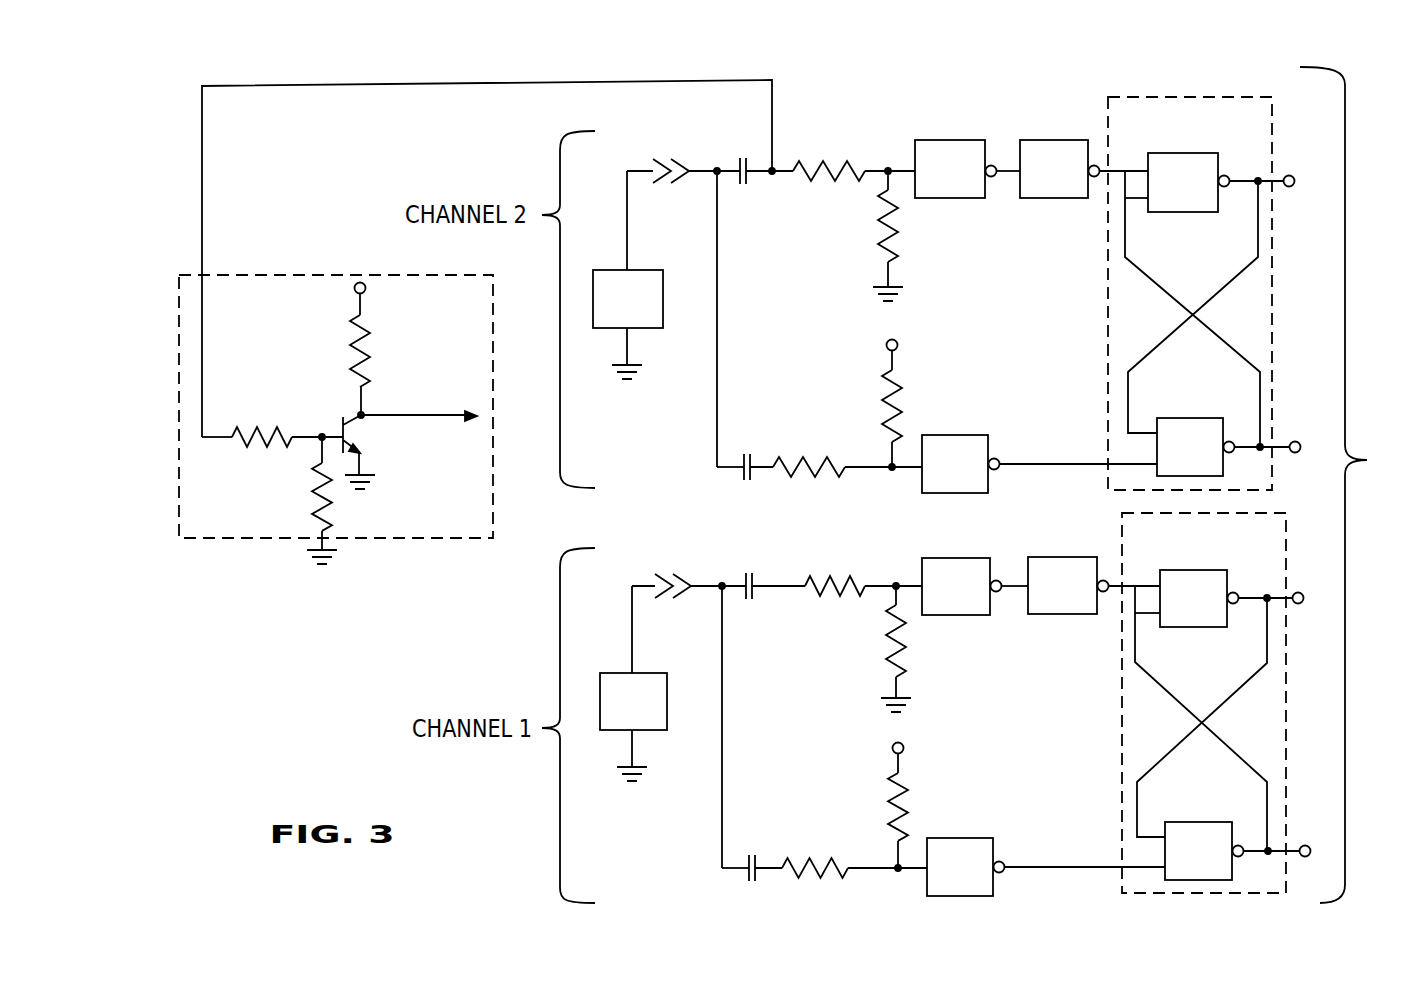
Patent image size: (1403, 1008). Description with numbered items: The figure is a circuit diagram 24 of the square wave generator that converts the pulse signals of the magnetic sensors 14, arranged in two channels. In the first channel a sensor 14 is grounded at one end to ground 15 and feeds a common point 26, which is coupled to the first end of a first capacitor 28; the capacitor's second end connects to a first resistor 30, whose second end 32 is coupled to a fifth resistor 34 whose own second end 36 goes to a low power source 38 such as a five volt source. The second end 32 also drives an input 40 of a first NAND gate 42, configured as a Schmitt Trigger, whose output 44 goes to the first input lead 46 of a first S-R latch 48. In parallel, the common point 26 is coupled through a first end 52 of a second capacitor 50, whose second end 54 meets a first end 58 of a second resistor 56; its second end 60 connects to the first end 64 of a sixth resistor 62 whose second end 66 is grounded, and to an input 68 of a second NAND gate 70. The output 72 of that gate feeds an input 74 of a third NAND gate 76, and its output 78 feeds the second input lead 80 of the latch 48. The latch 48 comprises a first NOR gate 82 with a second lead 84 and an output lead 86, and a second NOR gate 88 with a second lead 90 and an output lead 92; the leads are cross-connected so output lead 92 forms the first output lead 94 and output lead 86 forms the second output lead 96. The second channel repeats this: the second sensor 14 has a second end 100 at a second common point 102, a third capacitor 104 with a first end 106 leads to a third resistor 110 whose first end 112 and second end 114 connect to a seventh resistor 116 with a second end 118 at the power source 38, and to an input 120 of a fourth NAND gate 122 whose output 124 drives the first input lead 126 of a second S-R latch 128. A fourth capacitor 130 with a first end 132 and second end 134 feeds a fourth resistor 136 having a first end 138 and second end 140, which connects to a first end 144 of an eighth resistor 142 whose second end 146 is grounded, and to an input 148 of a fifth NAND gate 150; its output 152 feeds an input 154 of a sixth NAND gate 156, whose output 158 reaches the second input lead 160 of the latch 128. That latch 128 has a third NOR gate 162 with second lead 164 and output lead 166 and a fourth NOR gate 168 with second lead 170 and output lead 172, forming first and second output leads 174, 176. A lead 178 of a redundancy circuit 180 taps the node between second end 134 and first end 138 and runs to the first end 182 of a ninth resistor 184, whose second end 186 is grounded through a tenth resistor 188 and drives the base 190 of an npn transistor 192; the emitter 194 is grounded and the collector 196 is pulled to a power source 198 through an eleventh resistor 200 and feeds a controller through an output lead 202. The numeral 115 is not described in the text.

The sensor 14 is at (616, 312).
The ground 15 is at (338, 555).
The circuit diagram 24 is at (1368, 432).
The common point 26 is at (718, 592).
The first capacitor 28 is at (751, 853).
The first resistor 30 is at (797, 866).
The second end of first resistor 32 is at (867, 866).
The fifth resistor 34 is at (902, 804).
The second end of fifth resistor 36 is at (901, 866).
The low power source 38 is at (898, 342).
The input of first NAND gate 40 is at (912, 872).
The first NAND gate 42 is at (948, 880).
The output of first NAND gate 44 is at (1025, 866).
The first input lead of first S-R latch 46 is at (1135, 866).
The first SET-RESET (S-R) latch 48 is at (1183, 546).
The second capacitor 50 is at (751, 604).
The first end of second capacitor 52 is at (740, 580).
The second end of second capacitor 54 is at (763, 580).
The second resistor 56 is at (847, 598).
The first end of second resistor 58 is at (782, 582).
The second end of second resistor 60 is at (872, 582).
The sixth resistor 62 is at (900, 658).
The first end of sixth resistor 64 is at (901, 620).
The second end of sixth resistor 66 is at (890, 686).
The input of second NAND gate 68 is at (906, 580).
The second NAND gate 70 is at (944, 599).
The output of second NAND gate 72 is at (1003, 593).
The input of third NAND gate 74 is at (1012, 592).
The third NAND gate 76 is at (1050, 599).
The output of third NAND gate 78 is at (1115, 583).
The second input lead of first S-R latch 80 is at (1133, 584).
The first NOR gate 82 is at (1186, 864).
The second lead of first NOR gate 84 is at (1152, 836).
The output lead of first NOR gate 86 is at (1258, 848).
The second NOR gate 88 is at (1181, 611).
The second lead of second NOR gate 90 is at (1145, 618).
The output lead of second NOR gate 92 is at (1244, 594).
The first output lead of first S-R latch 94 is at (1298, 592).
The second output lead of first S-R latch 96 is at (1305, 844).
The second end of sensor 100 is at (627, 237).
The second common point 102 is at (714, 175).
The third capacitor 104 is at (744, 482).
The first end of third capacitor 106 is at (728, 474).
The third resistor 110 is at (782, 464).
The first end of third resistor 112 is at (757, 452).
The second end of third resistor 114 is at (868, 455).
The conductor 115 is at (893, 452).
The seventh resistor 116 is at (895, 398).
The second end of seventh resistor 118 is at (885, 362).
The input of fourth NAND gate 120 is at (907, 470).
The fourth NAND gate 122 is at (937, 477).
The output of fourth NAND gate 124 is at (1018, 458).
The first input lead of second S-R latch 126 is at (1130, 460).
The second SET-RESET (S-R) latch 128 is at (1167, 131).
The fourth capacitor 130 is at (745, 195).
The first end of fourth capacitor 132 is at (732, 168).
The second end of fourth capacitor 134 is at (763, 168).
The fourth resistor 136 is at (835, 185).
The first end of fourth resistor 138 is at (790, 178).
The second end of fourth resistor 140 is at (868, 175).
The eighth resistor 142 is at (895, 238).
The first end of eighth resistor 144 is at (889, 190).
The second end of eighth resistor 146 is at (880, 275).
The input of fifth NAND gate 148 is at (898, 168).
The fifth NAND gate 150 is at (932, 182).
The output of fifth NAND gate 152 is at (998, 176).
The input of sixth NAND gate 154 is at (1008, 175).
The sixth NAND gate 156 is at (1036, 182).
The output of sixth NAND gate 158 is at (1108, 167).
The second input lead of second S-R latch 160 is at (1123, 168).
The third NOR gate 162 is at (1172, 460).
The second lead of third NOR gate 164 is at (1145, 432).
The output lead of third NOR gate 166 is at (1250, 445).
The fourth NOR gate 168 is at (1165, 195).
The second lead of fourth NOR gate 170 is at (1136, 200).
The output lead of fourth NOR gate 172 is at (1236, 172).
The first output lead of second S-R latch 174 is at (1288, 170).
The second output lead of second S-R latch 176 is at (1296, 440).
The lead 178 is at (202, 215).
The redundancy circuit 180 is at (217, 306).
The first end of ninth resistor 182 is at (215, 437).
The ninth resistor 184 is at (258, 433).
The second end of ninth resistor 186 is at (320, 436).
The tenth resistor 188 is at (318, 500).
The base 190 is at (338, 428).
The npn transistor 192 is at (352, 445).
The emitter 194 is at (364, 480).
The collector 196 is at (363, 400).
The power source 198 is at (365, 292).
The eleventh resistor 200 is at (368, 365).
The output lead 202 is at (447, 418).